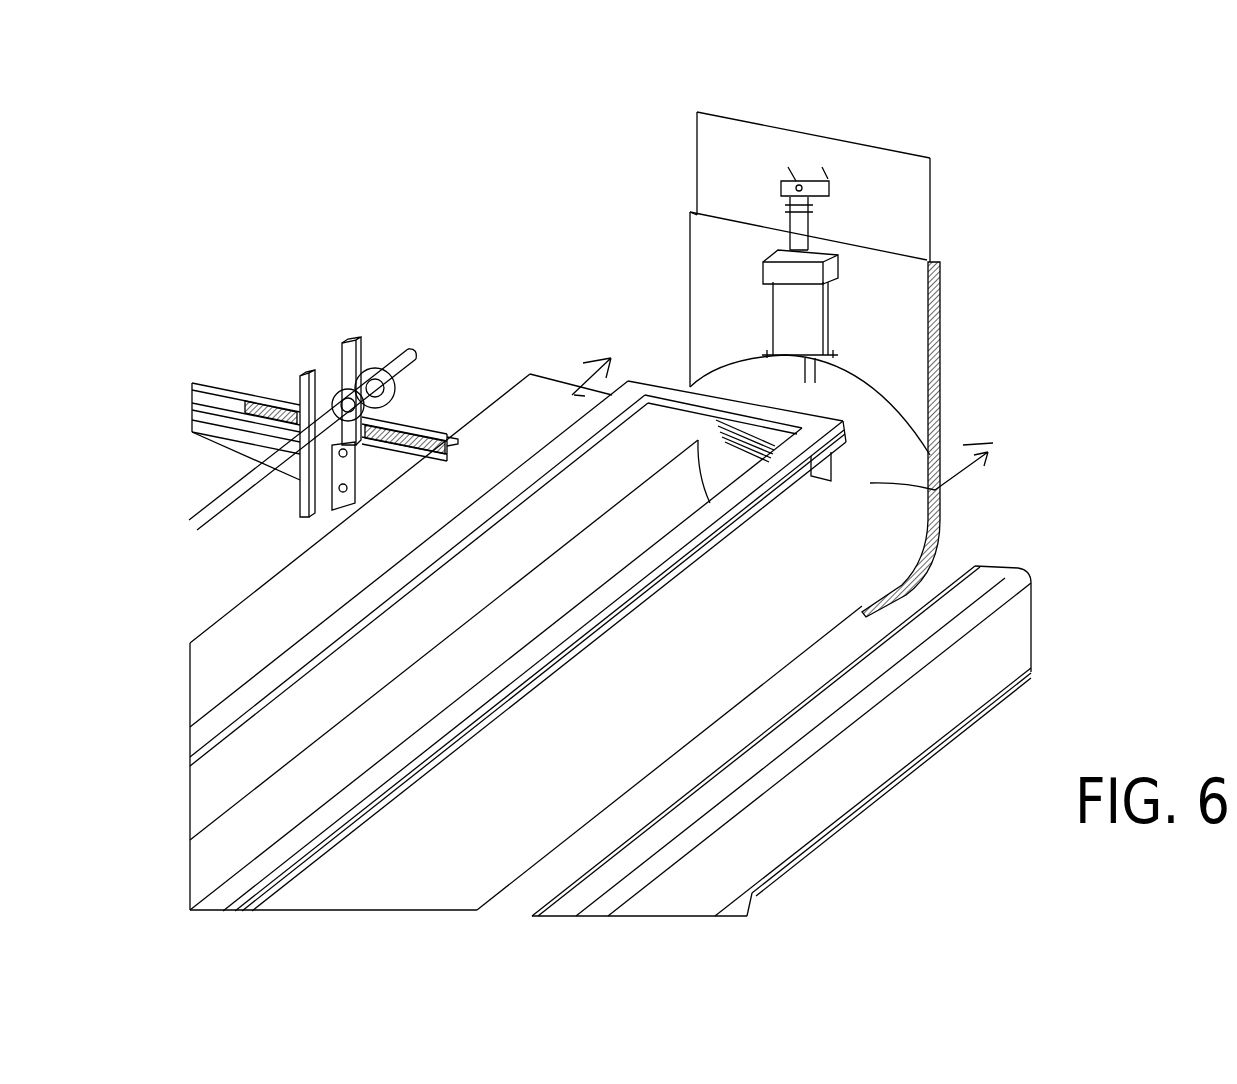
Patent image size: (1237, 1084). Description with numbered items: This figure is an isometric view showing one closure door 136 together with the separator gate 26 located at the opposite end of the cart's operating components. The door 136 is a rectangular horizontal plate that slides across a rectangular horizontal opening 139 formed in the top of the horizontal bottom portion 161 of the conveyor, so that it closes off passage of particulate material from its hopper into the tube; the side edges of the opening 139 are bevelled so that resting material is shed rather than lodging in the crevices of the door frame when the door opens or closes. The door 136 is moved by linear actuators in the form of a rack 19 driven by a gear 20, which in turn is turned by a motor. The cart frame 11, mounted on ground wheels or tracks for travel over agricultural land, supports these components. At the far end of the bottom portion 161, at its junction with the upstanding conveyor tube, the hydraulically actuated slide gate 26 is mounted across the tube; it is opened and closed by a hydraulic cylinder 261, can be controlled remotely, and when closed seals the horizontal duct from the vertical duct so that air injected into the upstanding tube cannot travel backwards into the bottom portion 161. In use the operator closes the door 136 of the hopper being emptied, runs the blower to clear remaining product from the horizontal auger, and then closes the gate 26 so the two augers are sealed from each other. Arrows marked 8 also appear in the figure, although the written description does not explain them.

The conveying direction 8 is at (749, 434).
The frame 11 is at (863, 747).
The rack 19 is at (263, 395).
The gear 20 is at (367, 343).
The slide gate 26 is at (907, 223).
The closure door 136 is at (550, 392).
The opening 139 is at (607, 553).
The horizontal bottom portion 161 is at (889, 530).
The hydraulic cylinder 261 is at (815, 313).